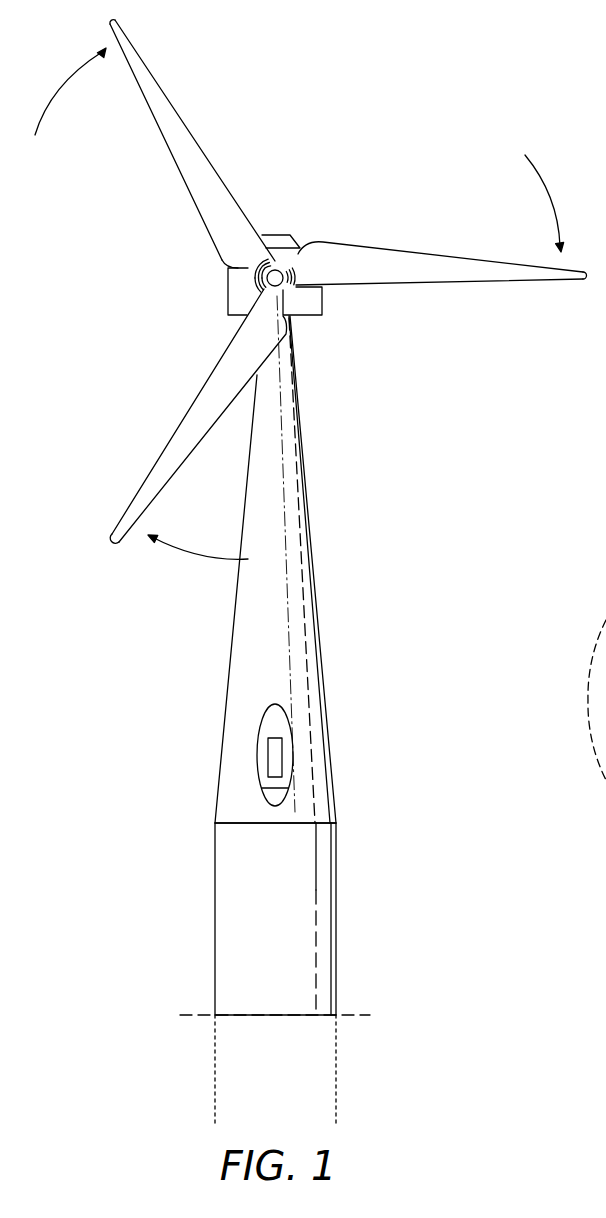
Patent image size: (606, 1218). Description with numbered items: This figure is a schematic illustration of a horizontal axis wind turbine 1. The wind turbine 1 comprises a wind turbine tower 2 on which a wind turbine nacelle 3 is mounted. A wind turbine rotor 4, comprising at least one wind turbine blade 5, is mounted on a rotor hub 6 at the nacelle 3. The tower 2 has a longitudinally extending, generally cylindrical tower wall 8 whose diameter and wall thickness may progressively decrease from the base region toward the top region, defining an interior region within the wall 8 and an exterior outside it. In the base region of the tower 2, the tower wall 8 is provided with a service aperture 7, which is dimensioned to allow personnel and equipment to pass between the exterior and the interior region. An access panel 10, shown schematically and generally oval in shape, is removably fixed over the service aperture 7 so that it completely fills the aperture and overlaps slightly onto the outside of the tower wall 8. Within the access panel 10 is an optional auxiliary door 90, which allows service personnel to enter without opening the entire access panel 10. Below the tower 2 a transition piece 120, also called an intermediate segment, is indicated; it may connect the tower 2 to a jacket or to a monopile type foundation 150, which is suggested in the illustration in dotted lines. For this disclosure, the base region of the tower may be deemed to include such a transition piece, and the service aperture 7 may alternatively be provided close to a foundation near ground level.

The wind turbine 1 is at (320, 571).
The wind turbine tower 2 is at (275, 655).
The wind turbine nacelle 3 is at (314, 303).
The wind turbine rotor 4 is at (348, 282).
The wind turbine blade 5 is at (497, 278).
The rotor hub 6 is at (276, 277).
The service aperture 7 is at (238, 781).
The tower wall 8 is at (226, 712).
The access panel 10 is at (257, 760).
The auxiliary door 90 is at (282, 755).
The transition piece 120 is at (336, 917).
The foundation 150 is at (317, 1063).